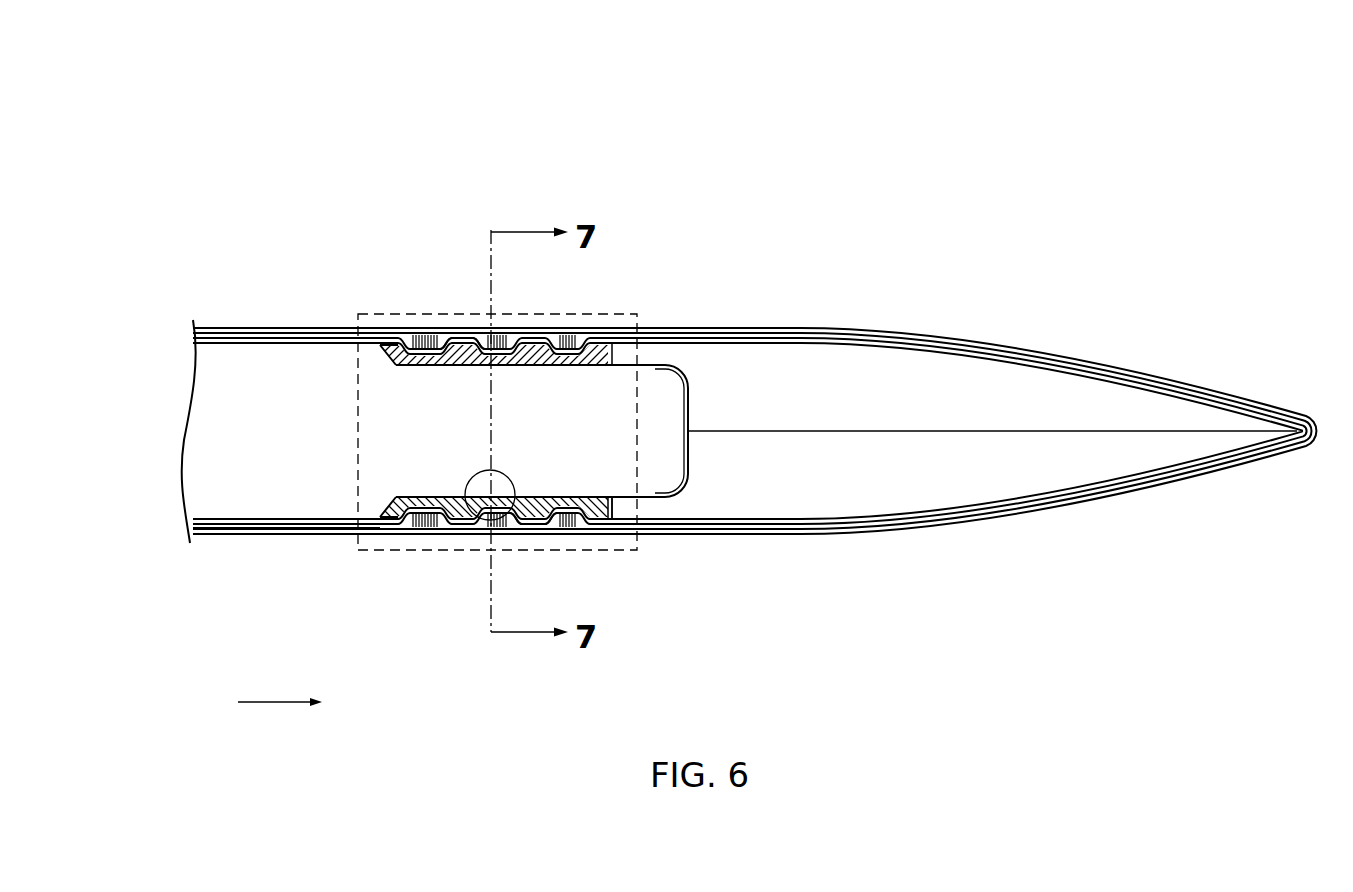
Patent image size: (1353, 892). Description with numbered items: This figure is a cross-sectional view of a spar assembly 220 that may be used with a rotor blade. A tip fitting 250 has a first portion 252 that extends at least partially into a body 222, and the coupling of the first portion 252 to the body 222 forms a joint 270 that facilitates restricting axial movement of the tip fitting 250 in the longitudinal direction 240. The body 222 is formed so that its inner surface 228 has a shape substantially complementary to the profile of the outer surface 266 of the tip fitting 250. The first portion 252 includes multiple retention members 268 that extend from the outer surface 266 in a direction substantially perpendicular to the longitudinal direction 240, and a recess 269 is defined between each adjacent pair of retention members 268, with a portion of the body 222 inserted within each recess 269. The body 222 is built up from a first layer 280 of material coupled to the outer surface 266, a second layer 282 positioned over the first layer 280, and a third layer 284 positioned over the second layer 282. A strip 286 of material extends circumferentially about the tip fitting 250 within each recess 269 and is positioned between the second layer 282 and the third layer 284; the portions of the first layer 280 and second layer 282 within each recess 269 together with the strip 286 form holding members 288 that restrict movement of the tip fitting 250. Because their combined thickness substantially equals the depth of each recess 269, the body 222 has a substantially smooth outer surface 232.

The spar assembly 220 is at (208, 105).
The body 222 is at (226, 553).
The inner surface 228 is at (207, 517).
The outer surface 232 is at (275, 535).
The longitudinal direction 240 is at (268, 710).
The tip fitting 250 is at (393, 507).
The first portion 252 is at (423, 553).
The outer surface 266 is at (609, 519).
The retention members 268 is at (524, 509).
The recess 269 is at (497, 521).
The joint 270 is at (477, 335).
The first layer 280 is at (302, 340).
The second layer 282 is at (320, 340).
The third layer 284 is at (340, 340).
The strip 286 is at (471, 338).
The holding members 288 is at (580, 332).